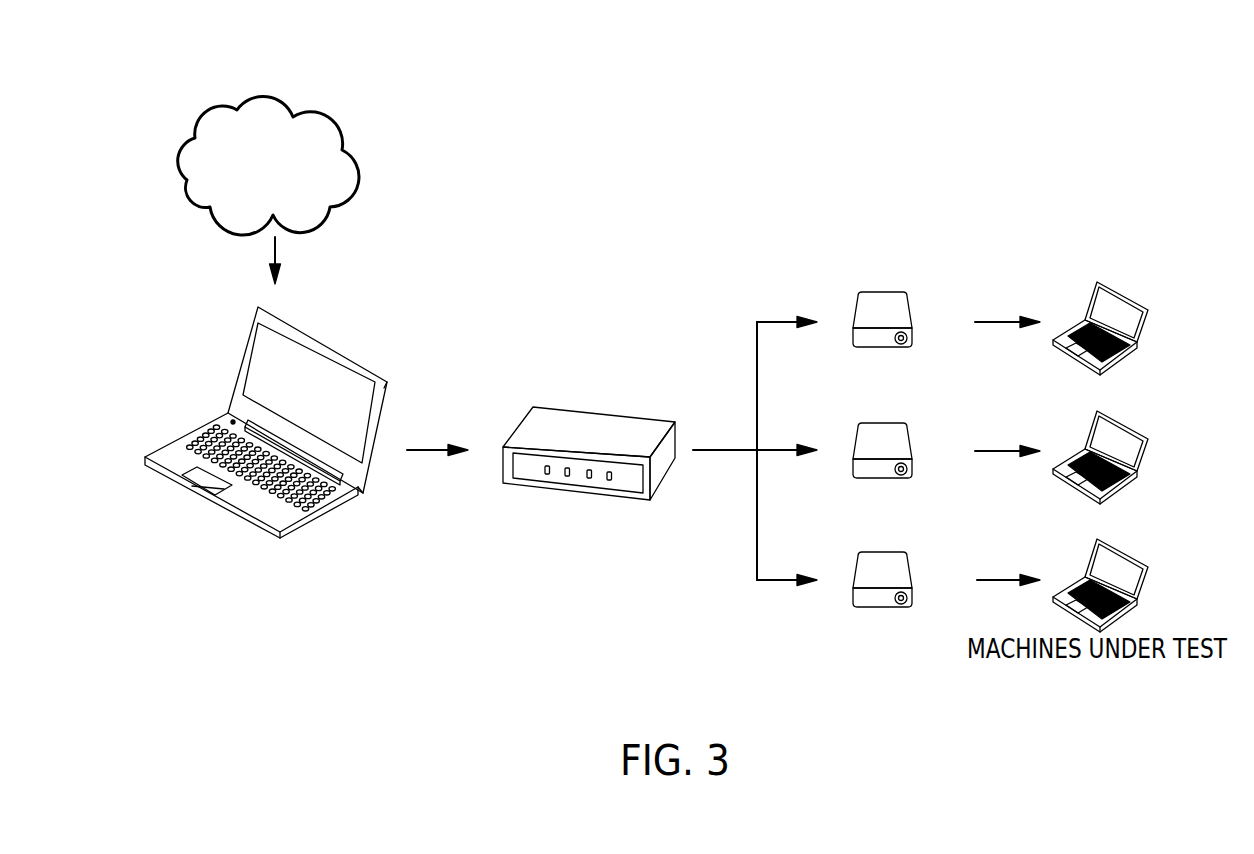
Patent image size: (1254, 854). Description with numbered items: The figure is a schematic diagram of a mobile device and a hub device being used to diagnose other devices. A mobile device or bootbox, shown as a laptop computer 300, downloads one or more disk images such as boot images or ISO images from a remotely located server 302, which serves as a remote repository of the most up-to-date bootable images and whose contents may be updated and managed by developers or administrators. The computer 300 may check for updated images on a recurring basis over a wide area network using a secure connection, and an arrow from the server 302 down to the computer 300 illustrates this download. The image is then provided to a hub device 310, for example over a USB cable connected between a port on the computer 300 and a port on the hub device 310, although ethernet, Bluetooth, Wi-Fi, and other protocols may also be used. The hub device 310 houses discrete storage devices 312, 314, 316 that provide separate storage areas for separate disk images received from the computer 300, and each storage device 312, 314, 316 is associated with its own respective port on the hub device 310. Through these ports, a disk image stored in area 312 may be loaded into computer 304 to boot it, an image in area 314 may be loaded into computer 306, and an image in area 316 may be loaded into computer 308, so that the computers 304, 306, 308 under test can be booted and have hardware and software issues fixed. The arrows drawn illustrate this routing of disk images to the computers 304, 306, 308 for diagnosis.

The laptop computer 300 is at (240, 362).
The remotely located server 302 is at (195, 158).
The computer 304 is at (1090, 303).
The computer 306 is at (1090, 432).
The computer 308 is at (1090, 561).
The hub device 310 is at (603, 413).
The storage device 312 is at (884, 292).
The storage device 314 is at (884, 423).
The storage device 316 is at (884, 552).